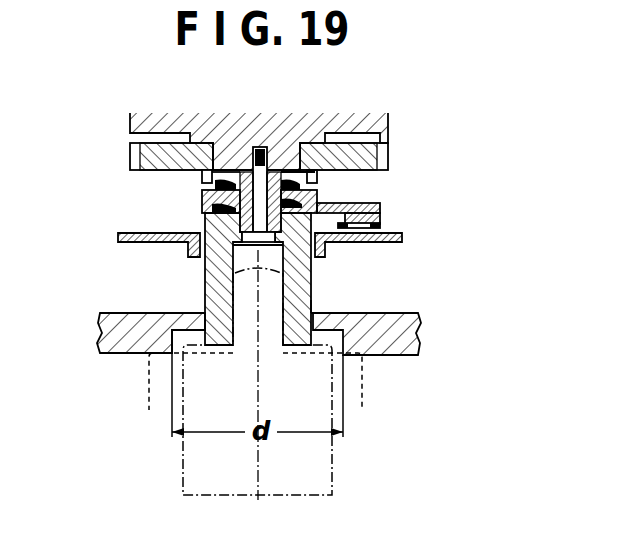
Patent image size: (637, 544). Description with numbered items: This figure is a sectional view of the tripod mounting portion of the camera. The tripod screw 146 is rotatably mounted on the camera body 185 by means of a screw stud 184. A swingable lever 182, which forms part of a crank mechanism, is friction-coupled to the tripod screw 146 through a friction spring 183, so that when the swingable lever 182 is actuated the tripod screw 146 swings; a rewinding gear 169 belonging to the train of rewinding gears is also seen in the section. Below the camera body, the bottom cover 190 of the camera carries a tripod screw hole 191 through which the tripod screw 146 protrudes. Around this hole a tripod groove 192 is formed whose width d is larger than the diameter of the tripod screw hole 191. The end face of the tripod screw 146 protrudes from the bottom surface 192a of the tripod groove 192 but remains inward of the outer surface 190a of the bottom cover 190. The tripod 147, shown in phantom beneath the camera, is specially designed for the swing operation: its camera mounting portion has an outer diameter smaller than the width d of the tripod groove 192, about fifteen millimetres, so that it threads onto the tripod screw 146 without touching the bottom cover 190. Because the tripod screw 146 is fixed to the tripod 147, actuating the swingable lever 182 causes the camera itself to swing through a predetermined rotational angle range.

The tripod screw 146 is at (302, 292).
The tripod 147 is at (182, 475).
The rewinding gear 169 is at (349, 150).
The swingable lever 182 is at (382, 207).
The friction spring 183 is at (316, 197).
The screw stud 184 is at (220, 228).
The camera body 185 is at (172, 118).
The bottom cover 190 is at (403, 335).
The outer surface 190a is at (388, 357).
The tripod screw hole 191 is at (317, 307).
The tripod groove 192 is at (163, 352).
The bottom surface 192a is at (168, 342).